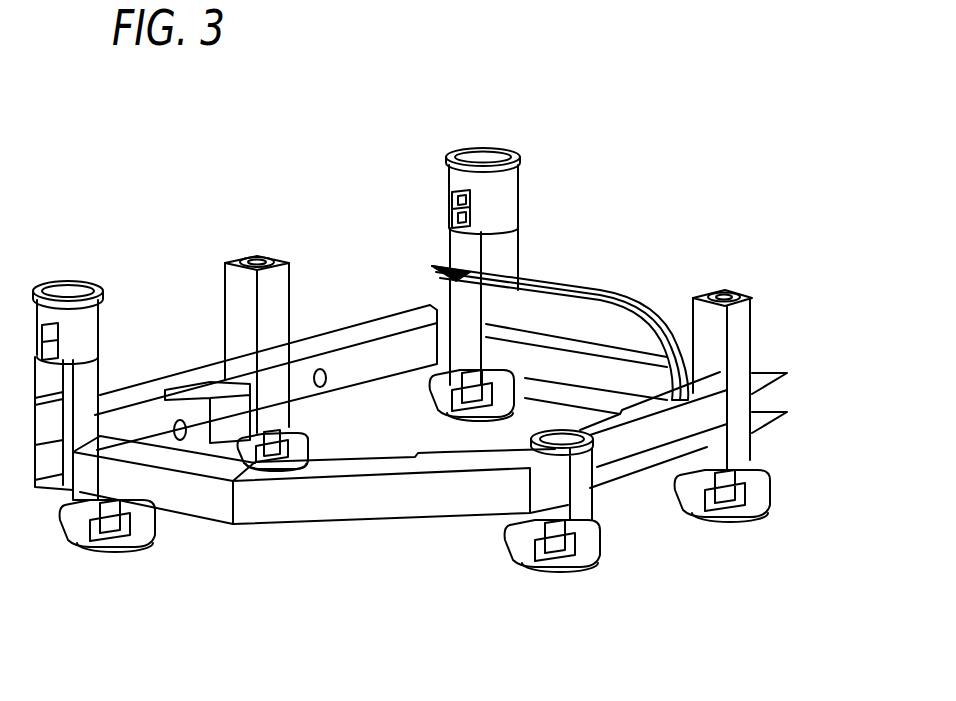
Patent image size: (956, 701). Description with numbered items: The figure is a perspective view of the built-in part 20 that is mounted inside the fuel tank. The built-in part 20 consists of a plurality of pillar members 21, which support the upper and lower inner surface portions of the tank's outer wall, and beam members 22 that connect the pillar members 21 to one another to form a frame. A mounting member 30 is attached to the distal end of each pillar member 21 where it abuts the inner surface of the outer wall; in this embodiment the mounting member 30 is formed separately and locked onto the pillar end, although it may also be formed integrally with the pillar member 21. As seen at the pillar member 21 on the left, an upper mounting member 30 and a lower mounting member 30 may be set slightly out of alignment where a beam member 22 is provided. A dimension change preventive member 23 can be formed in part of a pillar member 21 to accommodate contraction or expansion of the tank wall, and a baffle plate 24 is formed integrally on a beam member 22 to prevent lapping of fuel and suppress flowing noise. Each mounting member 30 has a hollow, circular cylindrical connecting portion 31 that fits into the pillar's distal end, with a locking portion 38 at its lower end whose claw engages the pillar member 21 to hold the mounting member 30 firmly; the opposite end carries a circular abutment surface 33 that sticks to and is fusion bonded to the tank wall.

The built-in part 20 is at (400, 437).
The pillar member 21 is at (92, 388).
The beam member 22 is at (405, 320).
The dimension change preventive member 23 is at (180, 380).
The baffle plate 24 is at (650, 320).
The mounting member 30 is at (411, 365).
The connecting portion 31 is at (510, 210).
The abutment surface 33 is at (490, 148).
The locking portion 38 is at (453, 193).